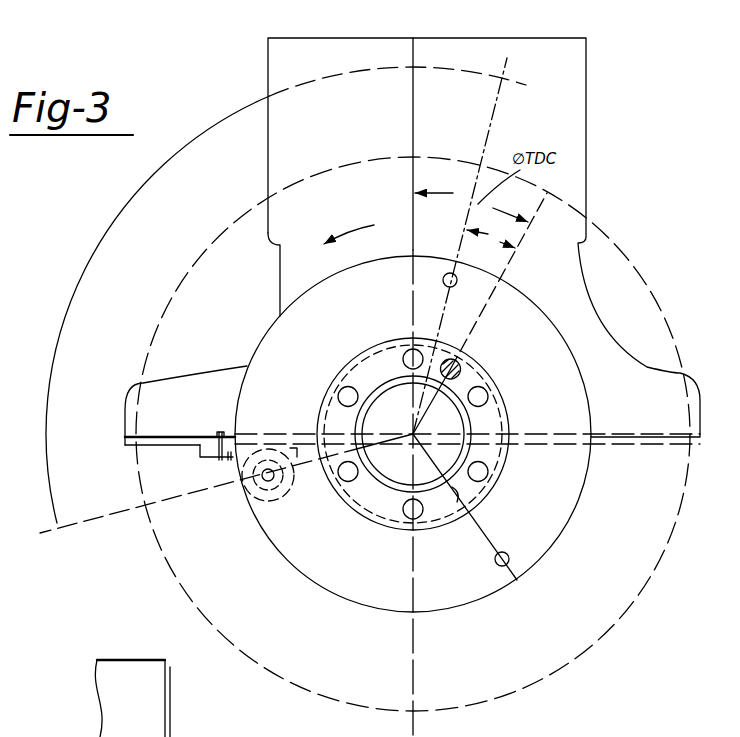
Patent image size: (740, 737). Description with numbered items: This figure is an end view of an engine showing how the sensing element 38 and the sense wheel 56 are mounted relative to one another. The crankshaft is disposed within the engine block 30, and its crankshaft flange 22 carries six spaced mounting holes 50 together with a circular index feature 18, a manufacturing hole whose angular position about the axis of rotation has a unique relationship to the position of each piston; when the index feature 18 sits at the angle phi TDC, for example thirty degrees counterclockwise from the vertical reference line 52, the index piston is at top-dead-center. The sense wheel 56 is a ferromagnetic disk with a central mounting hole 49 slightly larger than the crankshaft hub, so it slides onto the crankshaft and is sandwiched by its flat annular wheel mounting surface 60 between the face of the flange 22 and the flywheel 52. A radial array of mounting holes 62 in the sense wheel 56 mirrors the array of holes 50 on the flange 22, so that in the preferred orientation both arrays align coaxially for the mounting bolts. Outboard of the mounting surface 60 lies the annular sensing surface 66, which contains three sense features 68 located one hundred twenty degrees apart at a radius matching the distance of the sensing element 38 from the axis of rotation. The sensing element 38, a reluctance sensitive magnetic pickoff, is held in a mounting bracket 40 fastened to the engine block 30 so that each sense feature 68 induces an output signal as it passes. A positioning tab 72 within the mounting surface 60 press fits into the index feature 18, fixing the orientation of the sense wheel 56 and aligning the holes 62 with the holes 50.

The index feature 18 is at (462, 362).
The crankshaft flange 22 is at (357, 354).
The engine block 30 is at (572, 78).
The sensing element 38 is at (238, 495).
The mounting bracket 40 is at (198, 458).
The central mounting hole 49 is at (378, 484).
The mounting holes 50 is at (409, 349).
The flywheel 52 is at (413, 52).
The sense wheel 56 is at (300, 556).
The wheel mounting surface 60 is at (443, 500).
The mounting holes 62 is at (425, 356).
The annular sensing surface 66 is at (486, 526).
The sense features 68 is at (450, 272).
The positioning tab 72 is at (461, 372).